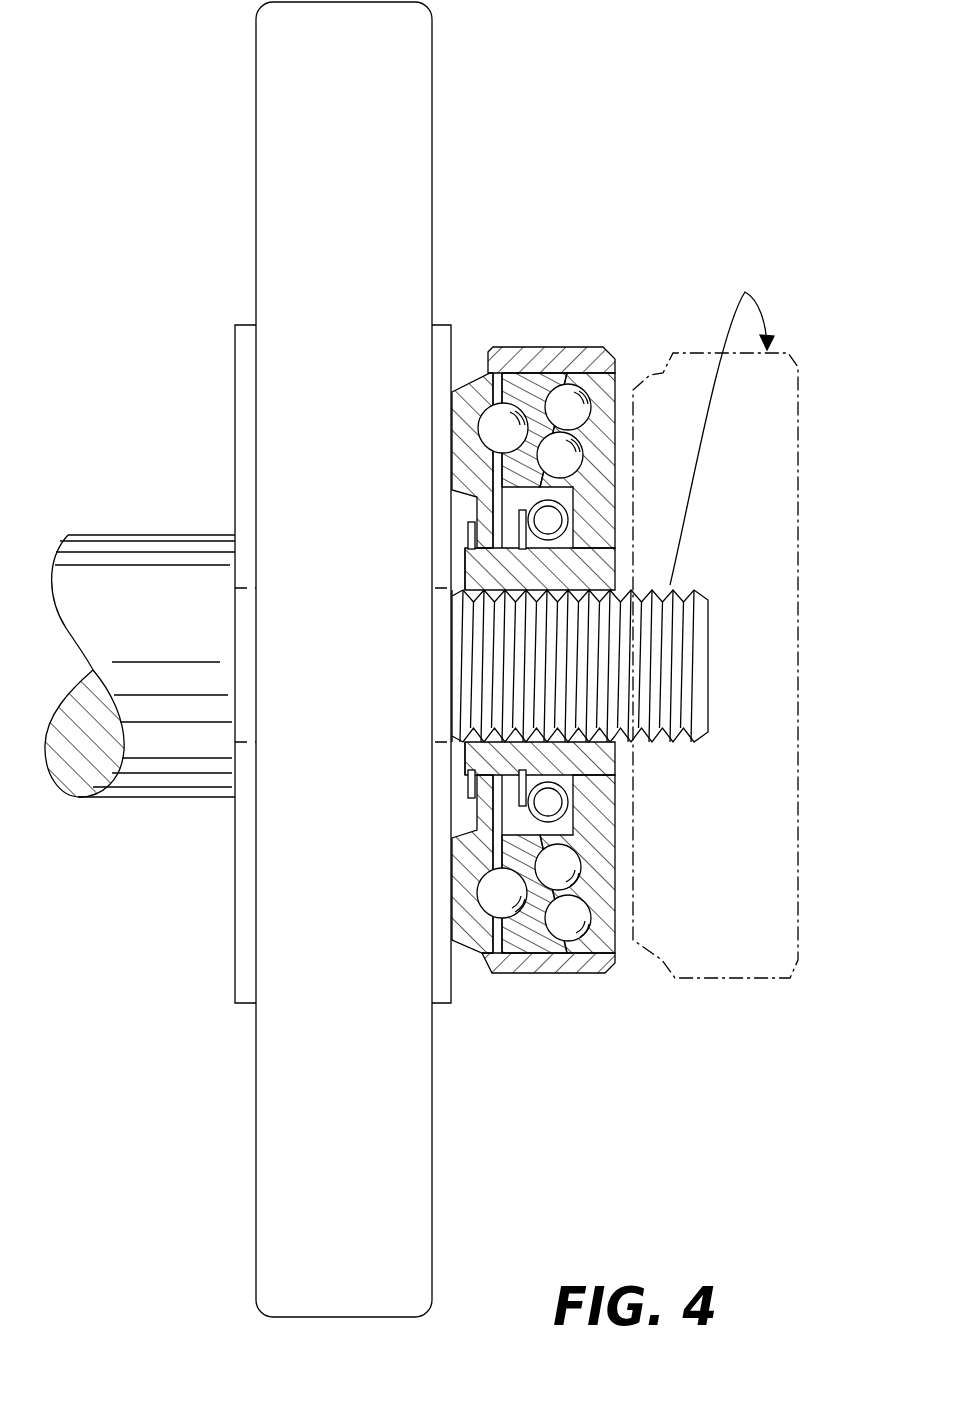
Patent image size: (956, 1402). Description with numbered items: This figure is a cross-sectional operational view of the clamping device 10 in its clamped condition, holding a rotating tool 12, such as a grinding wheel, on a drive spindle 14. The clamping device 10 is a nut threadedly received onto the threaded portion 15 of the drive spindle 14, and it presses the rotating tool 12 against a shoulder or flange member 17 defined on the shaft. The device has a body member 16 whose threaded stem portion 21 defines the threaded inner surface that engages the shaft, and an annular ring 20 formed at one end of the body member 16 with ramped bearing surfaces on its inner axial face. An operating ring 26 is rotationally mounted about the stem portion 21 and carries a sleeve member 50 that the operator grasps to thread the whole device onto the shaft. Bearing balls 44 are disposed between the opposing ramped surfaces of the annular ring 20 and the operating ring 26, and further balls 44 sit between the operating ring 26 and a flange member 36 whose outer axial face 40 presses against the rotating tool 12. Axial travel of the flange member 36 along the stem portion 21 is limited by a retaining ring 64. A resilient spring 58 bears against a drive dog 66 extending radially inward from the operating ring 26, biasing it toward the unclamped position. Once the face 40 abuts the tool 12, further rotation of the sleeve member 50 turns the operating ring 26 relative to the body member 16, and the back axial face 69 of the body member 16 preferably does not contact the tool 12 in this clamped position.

The clamping device 10 is at (572, 307).
The rotating tool 12 is at (403, 62).
The drive spindle 14 is at (140, 562).
The threaded portion 15 is at (648, 660).
The body member 16 is at (615, 833).
The flange member 17 is at (236, 775).
The annular ring 20 is at (592, 887).
The threaded stem portion 21 is at (573, 763).
The operating ring 26 is at (530, 942).
The flange member 36 is at (463, 372).
The outer axial face 40 is at (452, 430).
The bearing balls 44 is at (583, 462).
The sleeve member 50 is at (505, 963).
The resilient spring 58 is at (550, 518).
The retaining ring 64 is at (468, 532).
The drive dog 66 is at (520, 797).
The back axial face 69 is at (458, 572).